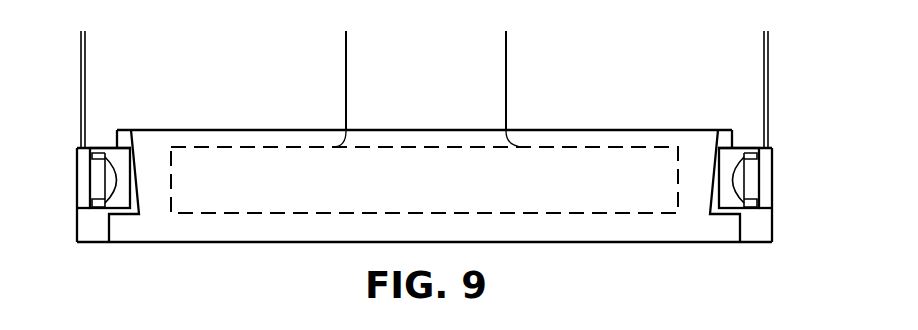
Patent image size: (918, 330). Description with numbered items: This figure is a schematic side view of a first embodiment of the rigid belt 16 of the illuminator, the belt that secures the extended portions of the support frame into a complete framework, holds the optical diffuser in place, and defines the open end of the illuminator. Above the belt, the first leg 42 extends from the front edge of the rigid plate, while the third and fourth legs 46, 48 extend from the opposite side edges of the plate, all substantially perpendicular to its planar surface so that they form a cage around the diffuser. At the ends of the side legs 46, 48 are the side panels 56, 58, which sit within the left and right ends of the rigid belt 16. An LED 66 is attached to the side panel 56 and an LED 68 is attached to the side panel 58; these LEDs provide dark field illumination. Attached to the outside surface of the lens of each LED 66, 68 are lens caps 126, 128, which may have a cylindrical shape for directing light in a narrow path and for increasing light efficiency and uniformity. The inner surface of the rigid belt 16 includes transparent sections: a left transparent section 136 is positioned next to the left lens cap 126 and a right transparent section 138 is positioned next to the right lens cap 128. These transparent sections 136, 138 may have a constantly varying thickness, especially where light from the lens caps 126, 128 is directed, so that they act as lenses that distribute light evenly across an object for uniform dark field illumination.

The rigid belt 16 is at (573, 242).
The first leg 42 is at (483, 92).
The third leg 46 is at (85, 59).
The fourth leg 48 is at (764, 43).
The side panel 56 is at (83, 193).
The side panel 58 is at (766, 193).
The LED 66 is at (98, 168).
The LED 68 is at (755, 172).
The lens cap 126 is at (115, 168).
The lens cap 128 is at (737, 173).
The left transparent section 136 is at (133, 183).
The right transparent section 138 is at (716, 183).